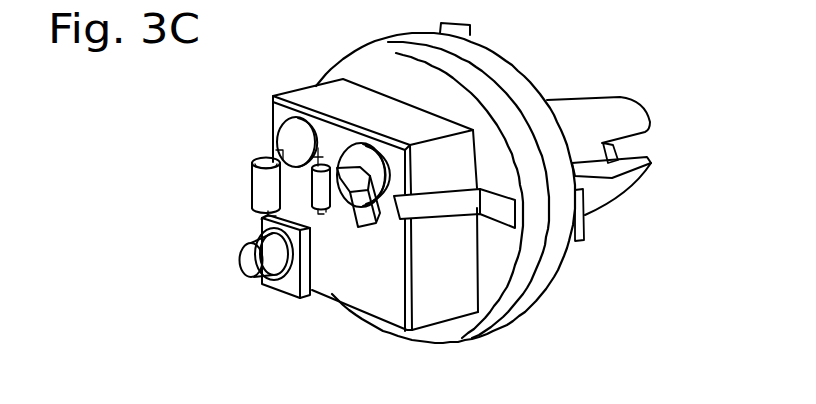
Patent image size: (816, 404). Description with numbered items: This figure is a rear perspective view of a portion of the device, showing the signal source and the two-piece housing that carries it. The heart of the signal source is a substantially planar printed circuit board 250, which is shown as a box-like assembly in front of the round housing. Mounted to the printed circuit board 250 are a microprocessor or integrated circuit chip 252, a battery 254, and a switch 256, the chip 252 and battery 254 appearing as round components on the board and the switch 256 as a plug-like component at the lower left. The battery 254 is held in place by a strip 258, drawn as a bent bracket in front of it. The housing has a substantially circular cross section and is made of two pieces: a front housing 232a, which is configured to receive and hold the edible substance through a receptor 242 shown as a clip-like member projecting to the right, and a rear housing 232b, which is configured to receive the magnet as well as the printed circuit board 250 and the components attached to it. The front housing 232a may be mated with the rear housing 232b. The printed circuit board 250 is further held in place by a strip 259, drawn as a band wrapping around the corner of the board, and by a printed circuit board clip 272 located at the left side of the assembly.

The front housing 232a is at (497, 329).
The rear housing 232b is at (385, 45).
The receptor 242 is at (643, 107).
The printed circuit board 250 is at (366, 300).
The microprocessor or integrated circuit chip 252 is at (282, 143).
The battery 254 is at (372, 145).
The switch 256 is at (241, 268).
The strip 258 is at (368, 224).
The strip 259 is at (493, 230).
The printed circuit board clip 272 is at (248, 195).